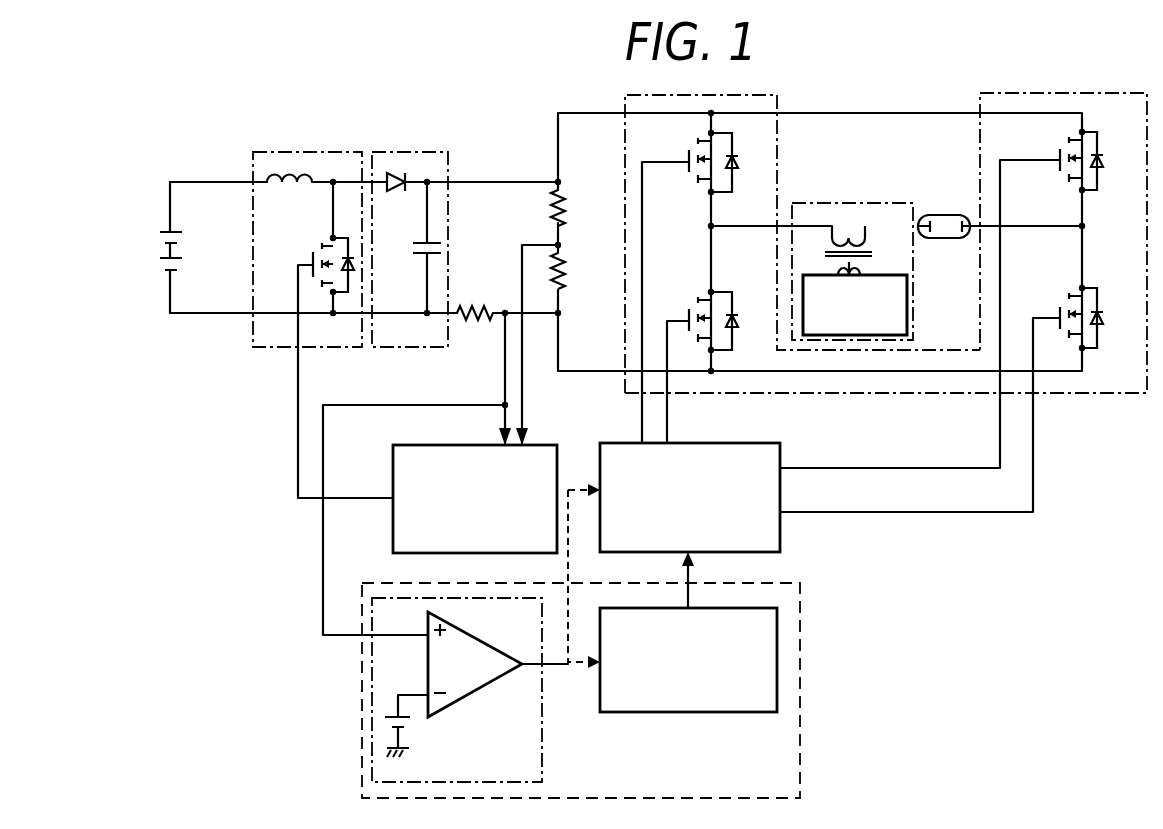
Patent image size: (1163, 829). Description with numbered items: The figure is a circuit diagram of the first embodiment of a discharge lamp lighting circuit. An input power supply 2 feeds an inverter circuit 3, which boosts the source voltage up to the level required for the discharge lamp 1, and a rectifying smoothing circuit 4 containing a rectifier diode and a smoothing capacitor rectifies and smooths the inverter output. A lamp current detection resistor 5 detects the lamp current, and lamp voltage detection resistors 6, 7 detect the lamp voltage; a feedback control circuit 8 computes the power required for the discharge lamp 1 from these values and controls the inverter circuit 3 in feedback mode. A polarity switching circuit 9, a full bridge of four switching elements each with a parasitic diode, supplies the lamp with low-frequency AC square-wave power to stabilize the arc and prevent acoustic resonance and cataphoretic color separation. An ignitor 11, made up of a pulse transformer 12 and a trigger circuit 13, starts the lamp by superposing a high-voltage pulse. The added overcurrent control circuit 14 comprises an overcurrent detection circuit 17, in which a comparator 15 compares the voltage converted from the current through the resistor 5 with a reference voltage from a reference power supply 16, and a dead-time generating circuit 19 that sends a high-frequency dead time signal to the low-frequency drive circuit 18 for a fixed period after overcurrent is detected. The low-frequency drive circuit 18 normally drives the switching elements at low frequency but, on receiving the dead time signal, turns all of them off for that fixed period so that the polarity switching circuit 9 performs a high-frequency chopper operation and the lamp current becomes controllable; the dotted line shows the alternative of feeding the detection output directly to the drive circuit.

The discharge lamp 1 is at (942, 212).
The input power supply 2 is at (183, 255).
The inverter circuit 3 is at (342, 151).
The rectifying smoothing circuit 4 is at (427, 151).
The lamp current detection resistor 5 is at (472, 303).
The lamp voltage detection resistor 6 is at (569, 212).
The lamp voltage detection resistor 7 is at (563, 278).
The feedback control circuit 8 is at (537, 442).
The polarity switching circuit 9 is at (1085, 393).
The ignitor 11 is at (868, 203).
The pulse transformer 12 is at (842, 230).
The trigger circuit 13 is at (908, 325).
The overcurrent control circuit 14 is at (803, 630).
The comparator 15 is at (468, 635).
The reference power supply 16 is at (382, 723).
The overcurrent detection circuit 17 is at (372, 760).
The low-frequency drive circuit 18 is at (738, 440).
The dead-time generating circuit 19 is at (752, 607).